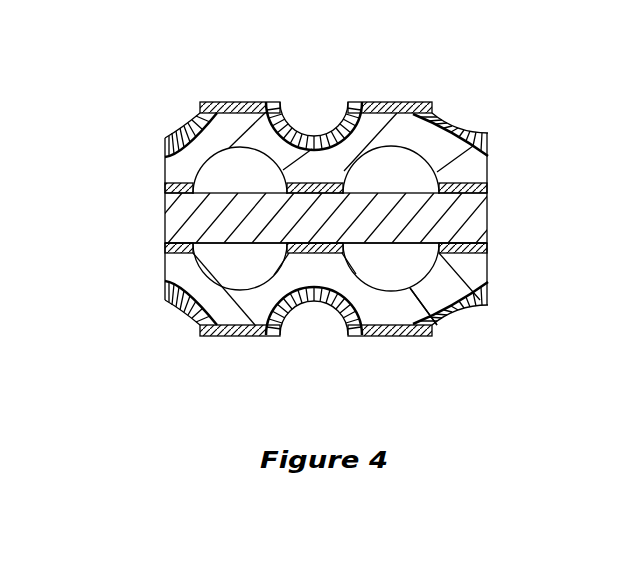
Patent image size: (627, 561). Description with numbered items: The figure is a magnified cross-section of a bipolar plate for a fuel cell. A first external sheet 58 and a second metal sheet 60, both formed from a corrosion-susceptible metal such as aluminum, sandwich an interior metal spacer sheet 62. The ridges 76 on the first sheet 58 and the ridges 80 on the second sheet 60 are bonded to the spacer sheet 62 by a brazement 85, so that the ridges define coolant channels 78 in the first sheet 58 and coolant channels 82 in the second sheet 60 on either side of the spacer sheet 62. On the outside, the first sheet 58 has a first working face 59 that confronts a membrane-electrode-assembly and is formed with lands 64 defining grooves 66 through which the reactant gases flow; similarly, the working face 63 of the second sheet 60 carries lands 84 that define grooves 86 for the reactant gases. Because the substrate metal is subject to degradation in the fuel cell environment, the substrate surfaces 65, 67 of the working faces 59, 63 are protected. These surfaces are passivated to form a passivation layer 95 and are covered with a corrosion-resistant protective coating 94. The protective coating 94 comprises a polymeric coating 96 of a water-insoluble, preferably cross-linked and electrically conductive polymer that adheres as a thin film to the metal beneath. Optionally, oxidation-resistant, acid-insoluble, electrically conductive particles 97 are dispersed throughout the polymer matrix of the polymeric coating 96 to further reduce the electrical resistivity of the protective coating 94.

The external sheet 58 is at (493, 153).
The first working face 59 is at (236, 97).
The metal sheet 60 is at (494, 291).
The interior metal spacer sheet 62 is at (494, 237).
The working face 63 is at (220, 345).
The lands 64 is at (268, 101).
The substrate surface 65 is at (215, 100).
The grooves 66 is at (329, 101).
The substrate surface 67 is at (239, 337).
The ridges 76 is at (490, 206).
The channels 78 is at (420, 180).
The ridges 80 is at (458, 250).
The channels 82 is at (409, 270).
The lands 84 is at (259, 305).
The brazement 85 is at (284, 188).
The grooves 86 is at (315, 301).
The corrosion-resistant protective coating 94 is at (408, 101).
The passivation layer 95 is at (165, 149).
The polymeric coating 96 is at (489, 130).
The conductive particles 97 is at (372, 101).